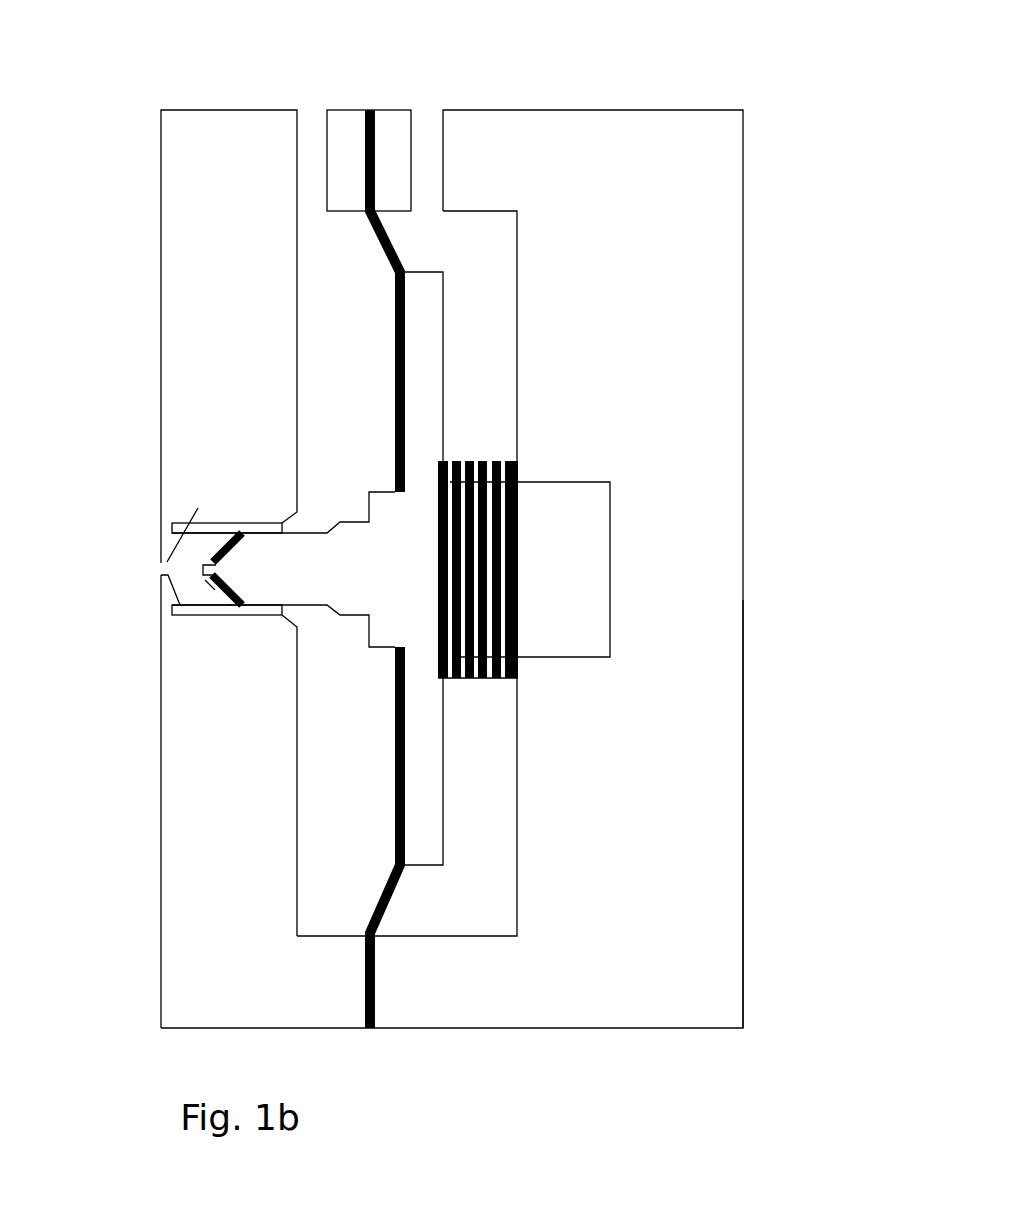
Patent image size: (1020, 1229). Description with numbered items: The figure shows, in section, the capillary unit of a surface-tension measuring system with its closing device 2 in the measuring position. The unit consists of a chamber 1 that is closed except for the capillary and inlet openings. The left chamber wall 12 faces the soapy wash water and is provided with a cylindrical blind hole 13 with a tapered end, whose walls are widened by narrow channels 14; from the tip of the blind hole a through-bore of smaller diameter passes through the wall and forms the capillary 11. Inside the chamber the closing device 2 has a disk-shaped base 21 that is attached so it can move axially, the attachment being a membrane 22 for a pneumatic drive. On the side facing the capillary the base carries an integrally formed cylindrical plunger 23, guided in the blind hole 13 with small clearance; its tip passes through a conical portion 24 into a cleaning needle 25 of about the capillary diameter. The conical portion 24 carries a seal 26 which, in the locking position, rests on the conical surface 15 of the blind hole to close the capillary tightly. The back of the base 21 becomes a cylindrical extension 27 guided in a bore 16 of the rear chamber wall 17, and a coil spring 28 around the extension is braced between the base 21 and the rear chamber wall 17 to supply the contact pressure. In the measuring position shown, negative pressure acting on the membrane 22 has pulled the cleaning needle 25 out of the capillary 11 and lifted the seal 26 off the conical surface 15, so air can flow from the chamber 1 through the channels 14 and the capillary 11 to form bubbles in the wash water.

The chamber 1 is at (672, 108).
The closing device 2 is at (443, 273).
The capillary 11 is at (162, 573).
The left chamber wall 12 is at (161, 890).
The blind hole 13 is at (238, 565).
The channels 14 is at (212, 528).
The conical surface 15 is at (198, 508).
The bore 16 is at (590, 482).
The rear chamber wall 17 is at (750, 905).
The disk-shaped base 21 is at (443, 326).
The membrane 22 is at (376, 992).
The plunger 23 is at (316, 560).
The conical portion 24 is at (213, 592).
The cleaning needle 25 is at (205, 563).
The seal 26 is at (230, 545).
The cylindrical extension 27 is at (578, 563).
The coil spring 28 is at (493, 678).